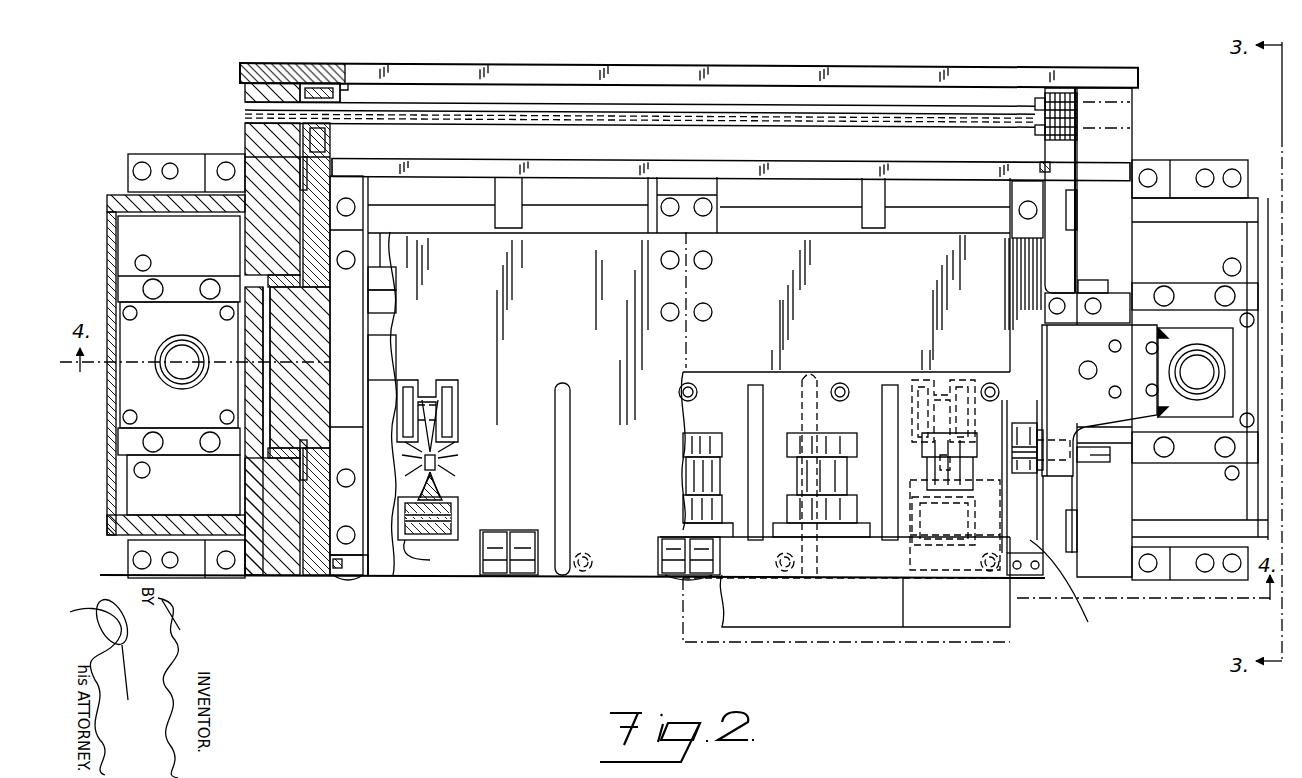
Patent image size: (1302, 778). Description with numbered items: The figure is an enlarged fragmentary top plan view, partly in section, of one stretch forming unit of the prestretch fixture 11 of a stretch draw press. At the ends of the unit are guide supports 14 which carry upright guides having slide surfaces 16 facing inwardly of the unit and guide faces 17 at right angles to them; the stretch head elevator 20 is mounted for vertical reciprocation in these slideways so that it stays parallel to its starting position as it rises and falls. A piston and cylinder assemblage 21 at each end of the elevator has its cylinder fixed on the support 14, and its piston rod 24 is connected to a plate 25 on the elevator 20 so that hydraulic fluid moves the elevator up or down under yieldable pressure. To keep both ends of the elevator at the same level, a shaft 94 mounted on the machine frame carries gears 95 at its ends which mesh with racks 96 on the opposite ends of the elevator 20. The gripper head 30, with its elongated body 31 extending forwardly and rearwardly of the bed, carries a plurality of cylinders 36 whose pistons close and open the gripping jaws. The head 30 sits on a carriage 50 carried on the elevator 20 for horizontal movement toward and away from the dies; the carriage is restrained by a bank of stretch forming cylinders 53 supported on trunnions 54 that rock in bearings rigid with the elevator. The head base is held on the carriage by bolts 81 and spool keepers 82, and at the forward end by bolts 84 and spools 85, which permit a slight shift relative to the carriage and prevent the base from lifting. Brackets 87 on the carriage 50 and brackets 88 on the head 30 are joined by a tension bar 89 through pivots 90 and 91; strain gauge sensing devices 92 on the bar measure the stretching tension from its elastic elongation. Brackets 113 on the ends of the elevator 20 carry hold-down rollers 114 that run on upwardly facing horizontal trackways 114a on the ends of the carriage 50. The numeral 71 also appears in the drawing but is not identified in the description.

The prestretch fixture 11 is at (500, 585).
The guide support 14 is at (1150, 160).
The upright slide surface 16 is at (300, 205).
The upright guide face 17 is at (270, 272).
The stretch head elevator 20 is at (275, 332).
The piston and cylinder assemblage 21 is at (135, 390).
The piston rod 24 is at (182, 358).
The plate 25 is at (1040, 330).
The gripper head 30 is at (930, 612).
The elongated body 31 is at (811, 600).
The cylinder 36 is at (708, 432).
The carriage 50 is at (757, 242).
The cylinder 53 is at (383, 337).
The trunnion 54 is at (377, 530).
The roller brackets 71 is at (490, 550).
The bolt 81 is at (690, 385).
The spool keeper 82 is at (695, 388).
The bolt 84 is at (580, 572).
The spool 85 is at (585, 548).
The bracket 87 is at (410, 385).
The bracket 88 is at (433, 558).
The tension bar 89 is at (440, 448).
The pivot 90 is at (460, 400).
The pivot 91 is at (455, 520).
The sensing device 92 is at (425, 460).
The shaft 94 is at (662, 112).
The gear 95 is at (348, 92).
The rack 96 is at (335, 146).
The bracket 113 is at (1122, 372).
The hold-down roller 114 is at (1025, 440).
The trackway 114a is at (1086, 589).